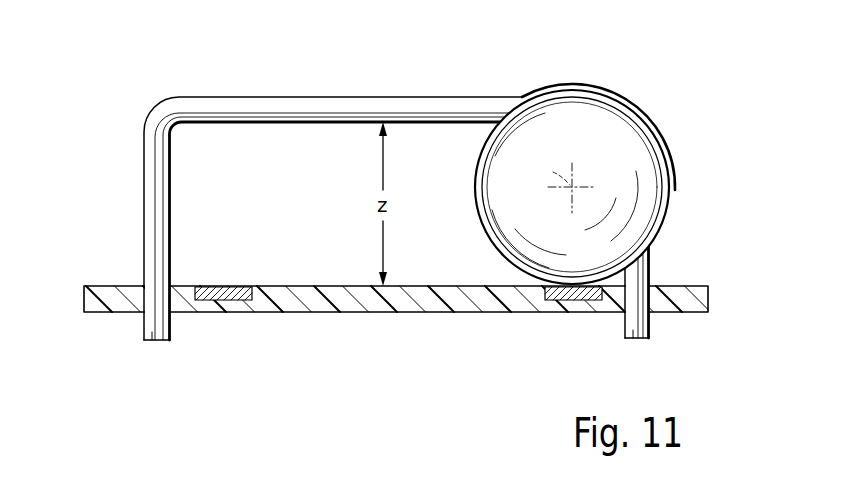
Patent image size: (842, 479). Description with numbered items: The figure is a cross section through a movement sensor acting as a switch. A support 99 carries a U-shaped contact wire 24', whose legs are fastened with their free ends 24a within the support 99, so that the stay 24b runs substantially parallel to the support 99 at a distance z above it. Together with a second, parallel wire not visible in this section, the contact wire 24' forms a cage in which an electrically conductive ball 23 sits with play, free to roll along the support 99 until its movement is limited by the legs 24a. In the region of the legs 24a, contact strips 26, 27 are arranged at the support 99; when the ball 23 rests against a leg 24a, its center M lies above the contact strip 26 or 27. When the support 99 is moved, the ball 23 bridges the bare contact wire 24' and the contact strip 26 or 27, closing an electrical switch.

The ball 23 is at (645, 153).
The U-shaped contact wire 24' is at (333, 184).
The free ends of legs 24a is at (152, 341).
The stay 24b is at (451, 102).
The contact strip 26 is at (216, 294).
The contact strip 27 is at (578, 297).
The support 99 is at (690, 292).